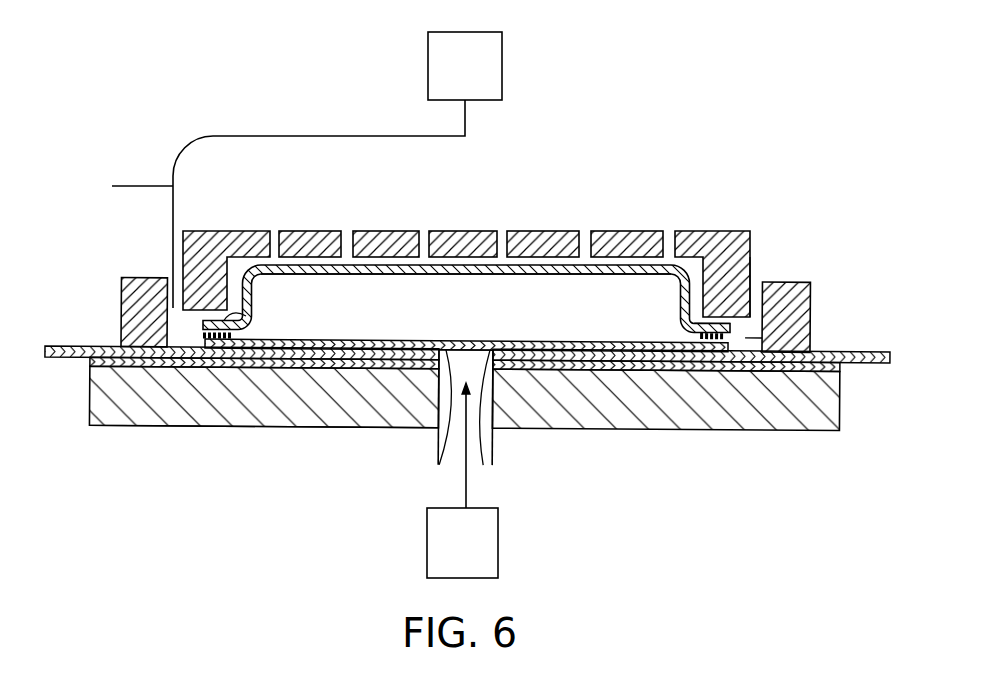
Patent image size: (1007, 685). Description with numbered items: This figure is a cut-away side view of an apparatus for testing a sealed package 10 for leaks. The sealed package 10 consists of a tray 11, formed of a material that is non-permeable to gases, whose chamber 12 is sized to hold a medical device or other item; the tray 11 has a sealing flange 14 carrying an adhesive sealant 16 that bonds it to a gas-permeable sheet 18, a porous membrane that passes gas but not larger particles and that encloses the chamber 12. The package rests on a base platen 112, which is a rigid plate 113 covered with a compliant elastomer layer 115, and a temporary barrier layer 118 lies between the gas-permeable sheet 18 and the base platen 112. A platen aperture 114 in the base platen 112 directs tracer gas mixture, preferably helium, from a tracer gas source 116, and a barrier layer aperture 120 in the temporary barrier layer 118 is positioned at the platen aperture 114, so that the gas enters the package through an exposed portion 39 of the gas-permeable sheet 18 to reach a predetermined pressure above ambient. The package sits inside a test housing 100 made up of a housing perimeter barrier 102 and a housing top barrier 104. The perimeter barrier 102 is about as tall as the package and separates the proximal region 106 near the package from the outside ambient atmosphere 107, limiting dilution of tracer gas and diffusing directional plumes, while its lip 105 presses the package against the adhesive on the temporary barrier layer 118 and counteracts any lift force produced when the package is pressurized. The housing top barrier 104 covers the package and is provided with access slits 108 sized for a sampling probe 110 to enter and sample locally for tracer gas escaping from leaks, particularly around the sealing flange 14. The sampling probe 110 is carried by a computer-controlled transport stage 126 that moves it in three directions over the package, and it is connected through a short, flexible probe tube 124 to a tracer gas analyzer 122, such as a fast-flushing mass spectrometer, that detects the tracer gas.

The sealed package 10 is at (330, 263).
The tray 11 is at (473, 277).
The chamber 12 is at (410, 320).
The sealing flange 14 is at (236, 318).
The adhesive sealant 16 is at (700, 334).
The gas-permeable sheet 18 is at (565, 334).
The exposed portion of gas-permeable sheet 39 is at (465, 335).
The test housing 100 is at (716, 222).
The housing perimeter barrier 102 is at (787, 277).
The housing top barrier 104 is at (483, 231).
The lip 105 is at (737, 318).
The proximal region 106 is at (812, 314).
The outside ambient atmosphere 107 is at (763, 255).
The access slits 108 is at (427, 231).
The sampling probe 110 is at (173, 218).
The base platen 112 is at (700, 428).
The rigid plate 113 is at (291, 425).
The platen aperture 114 is at (493, 446).
The elastomer layer 115 is at (91, 366).
The tracer gas source 116 is at (480, 555).
The temporary barrier layer 118 is at (87, 345).
The barrier layer aperture 120 is at (439, 428).
The tracer gas analyzer 122 is at (482, 78).
The probe tube 124 is at (296, 134).
The transport stage 126 is at (135, 185).